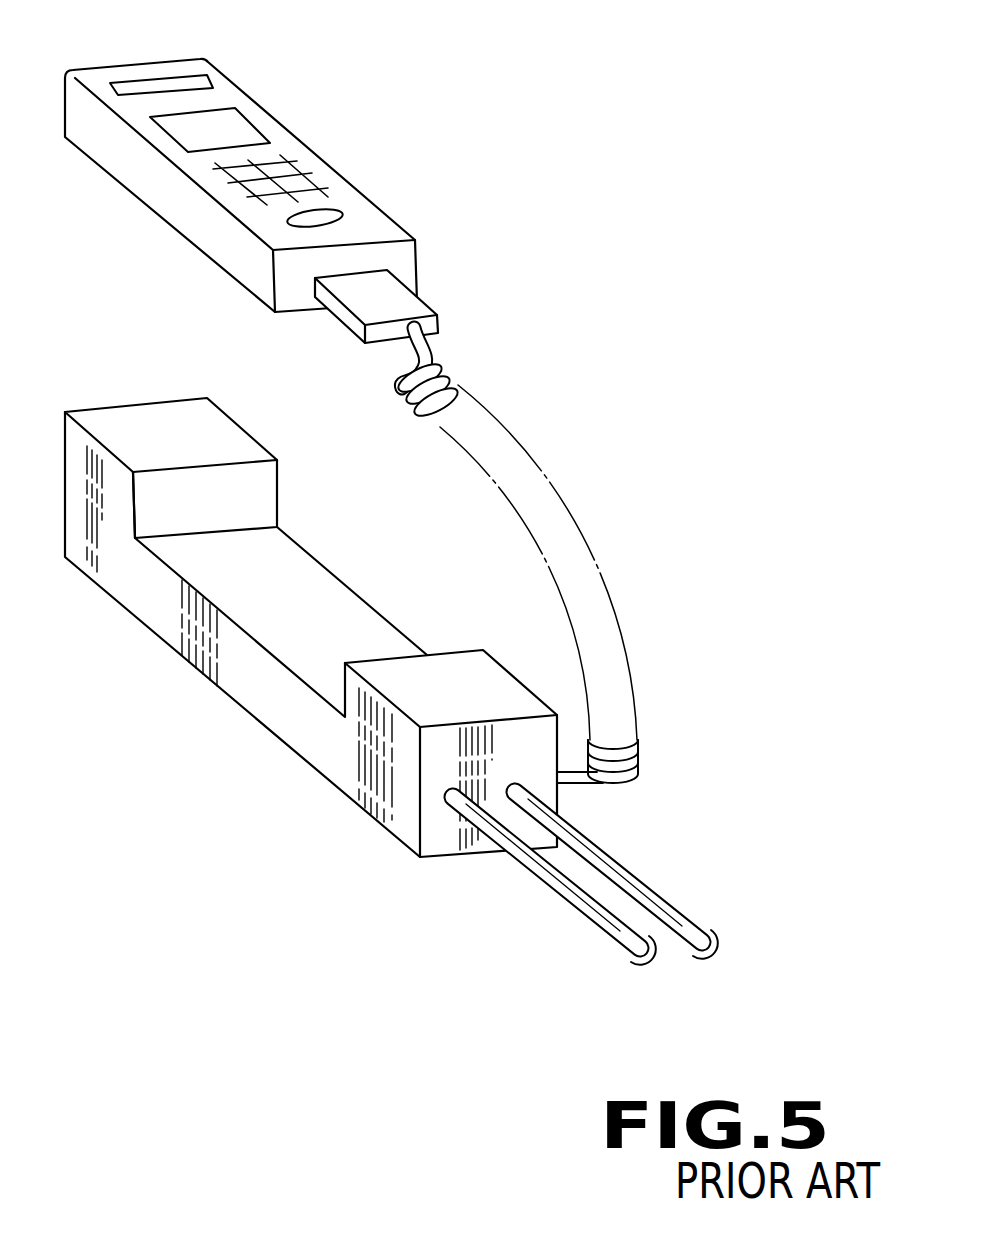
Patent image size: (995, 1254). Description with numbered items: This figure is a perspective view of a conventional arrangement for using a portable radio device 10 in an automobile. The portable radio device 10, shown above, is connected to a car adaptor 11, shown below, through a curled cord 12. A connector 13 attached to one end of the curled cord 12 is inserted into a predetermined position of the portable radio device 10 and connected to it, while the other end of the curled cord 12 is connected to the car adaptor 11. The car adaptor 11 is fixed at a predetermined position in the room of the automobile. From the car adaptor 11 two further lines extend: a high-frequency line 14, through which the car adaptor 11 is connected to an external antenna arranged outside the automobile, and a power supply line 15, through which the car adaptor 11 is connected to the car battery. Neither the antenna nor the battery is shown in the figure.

The portable radio device 10 is at (222, 97).
The car adaptor 11 is at (255, 692).
The curled cord 12 is at (447, 370).
The connector 13 is at (397, 290).
The high-frequency line 14 is at (573, 893).
The power supply line 15 is at (648, 895).